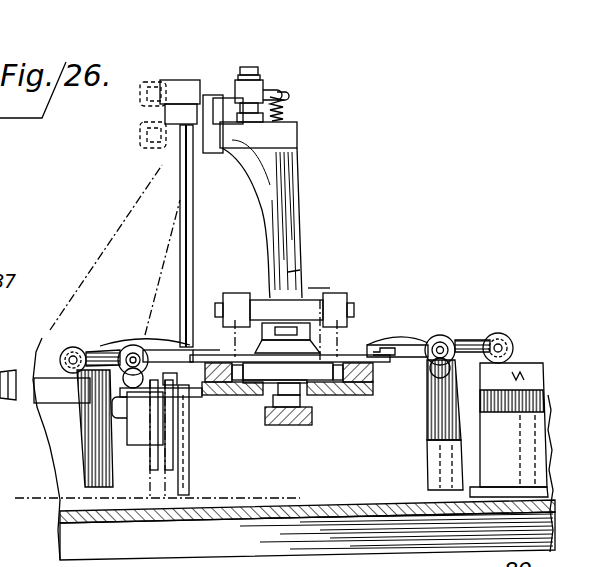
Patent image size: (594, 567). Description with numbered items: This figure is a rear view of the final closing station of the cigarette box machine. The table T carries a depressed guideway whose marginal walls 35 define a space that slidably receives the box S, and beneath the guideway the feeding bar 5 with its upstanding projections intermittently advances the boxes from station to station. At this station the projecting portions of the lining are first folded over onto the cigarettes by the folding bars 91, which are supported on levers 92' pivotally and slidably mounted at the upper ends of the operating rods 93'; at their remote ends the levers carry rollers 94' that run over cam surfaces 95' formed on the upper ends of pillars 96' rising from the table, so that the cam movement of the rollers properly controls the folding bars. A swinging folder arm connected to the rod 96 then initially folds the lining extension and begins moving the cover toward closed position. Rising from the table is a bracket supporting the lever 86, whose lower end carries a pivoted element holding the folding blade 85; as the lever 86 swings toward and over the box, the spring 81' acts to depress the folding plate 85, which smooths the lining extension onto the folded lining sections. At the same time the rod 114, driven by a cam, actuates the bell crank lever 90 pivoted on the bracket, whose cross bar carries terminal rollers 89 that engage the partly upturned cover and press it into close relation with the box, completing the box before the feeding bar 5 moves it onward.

The spring 81' is at (285, 95).
The rod 114 is at (180, 224).
The lever 86 is at (266, 228).
The bell crank lever 90 is at (300, 270).
The terminal rollers 89 is at (235, 300).
The folding blade 85 is at (312, 346).
The folding bars 91 is at (216, 356).
The marginal walls 35 is at (357, 392).
The boxes S is at (320, 390).
The bar 5 is at (288, 425).
The table T is at (273, 506).
The rod 96 is at (130, 417).
The levers 92' is at (400, 333).
The operating rods 93' is at (457, 329).
The rollers 94' is at (491, 334).
The cam surfaces 95' is at (509, 402).
The pillars 96' is at (436, 425).